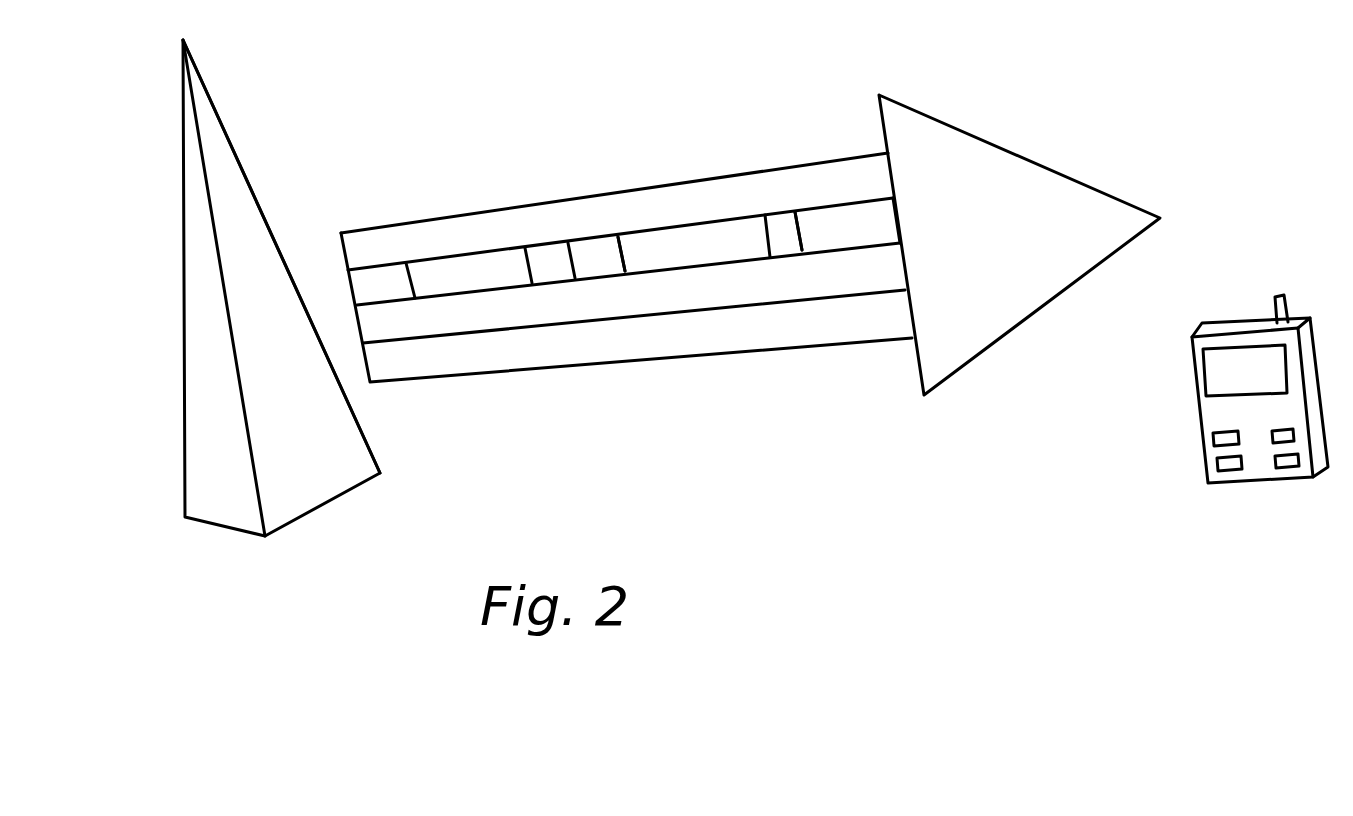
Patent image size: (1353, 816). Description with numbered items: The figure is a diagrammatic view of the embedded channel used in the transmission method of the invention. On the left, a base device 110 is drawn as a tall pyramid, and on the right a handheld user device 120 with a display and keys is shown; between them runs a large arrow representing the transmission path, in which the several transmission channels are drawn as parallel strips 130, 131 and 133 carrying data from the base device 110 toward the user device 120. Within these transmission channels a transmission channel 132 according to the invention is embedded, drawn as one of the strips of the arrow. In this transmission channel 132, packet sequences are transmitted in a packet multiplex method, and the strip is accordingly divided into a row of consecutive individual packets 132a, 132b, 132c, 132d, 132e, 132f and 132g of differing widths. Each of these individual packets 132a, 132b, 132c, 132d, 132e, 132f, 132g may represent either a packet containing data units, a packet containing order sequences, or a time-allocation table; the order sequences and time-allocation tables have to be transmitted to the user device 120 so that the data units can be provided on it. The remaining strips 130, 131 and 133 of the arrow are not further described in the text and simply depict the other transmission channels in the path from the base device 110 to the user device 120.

The base device 110 is at (165, 302).
The user device 120 is at (1232, 308).
The arrow / data stream 130 is at (610, 340).
The data field 131 is at (450, 313).
The transmission channel 132 is at (347, 290).
The individual packet 132a is at (393, 287).
The individual packet 132b is at (507, 273).
The individual packet 132c is at (553, 270).
The individual packet 132d is at (600, 258).
The individual packet 132e is at (658, 253).
The individual packet 132f is at (783, 242).
The individual packet 132g is at (835, 237).
The header field 133 is at (435, 247).